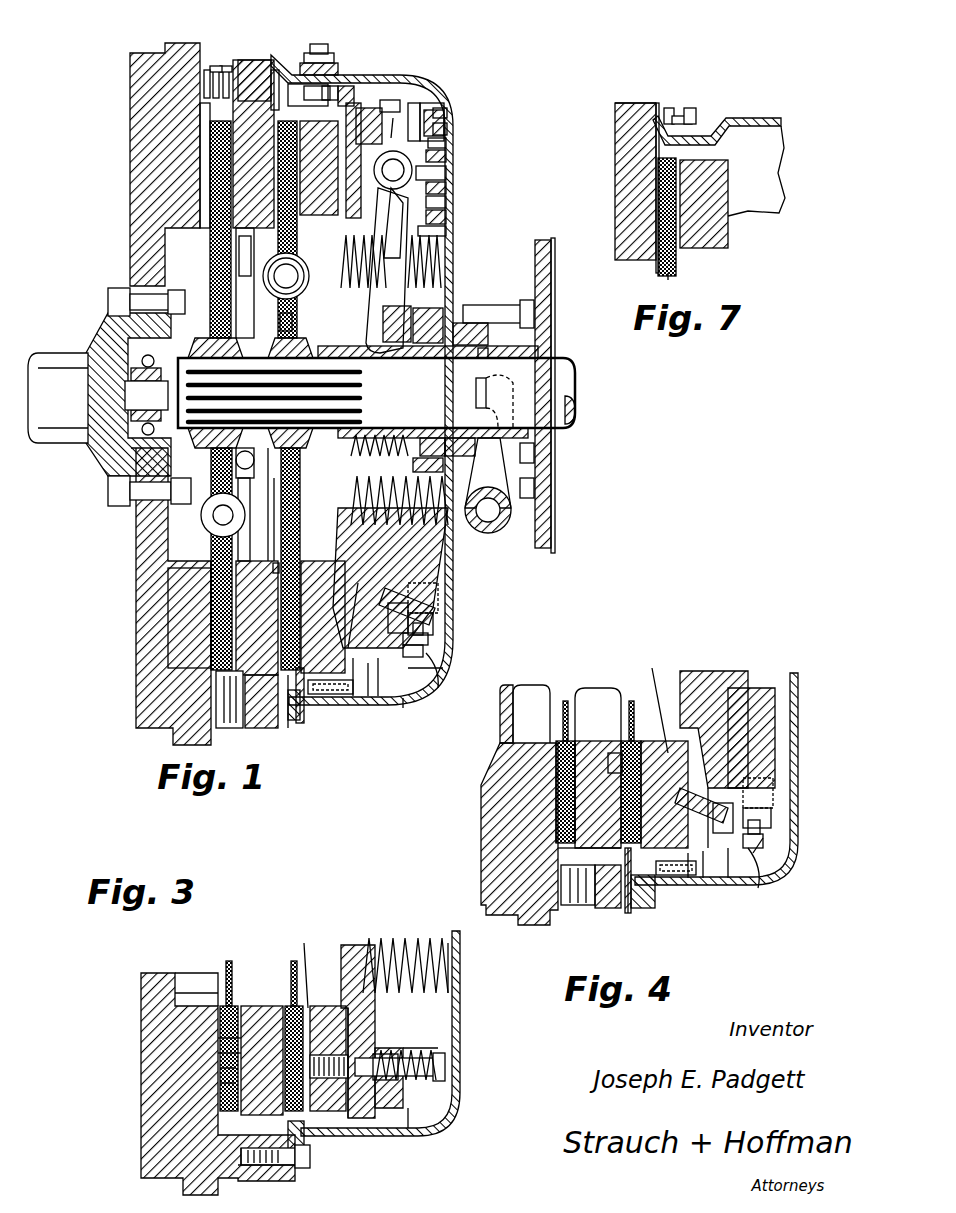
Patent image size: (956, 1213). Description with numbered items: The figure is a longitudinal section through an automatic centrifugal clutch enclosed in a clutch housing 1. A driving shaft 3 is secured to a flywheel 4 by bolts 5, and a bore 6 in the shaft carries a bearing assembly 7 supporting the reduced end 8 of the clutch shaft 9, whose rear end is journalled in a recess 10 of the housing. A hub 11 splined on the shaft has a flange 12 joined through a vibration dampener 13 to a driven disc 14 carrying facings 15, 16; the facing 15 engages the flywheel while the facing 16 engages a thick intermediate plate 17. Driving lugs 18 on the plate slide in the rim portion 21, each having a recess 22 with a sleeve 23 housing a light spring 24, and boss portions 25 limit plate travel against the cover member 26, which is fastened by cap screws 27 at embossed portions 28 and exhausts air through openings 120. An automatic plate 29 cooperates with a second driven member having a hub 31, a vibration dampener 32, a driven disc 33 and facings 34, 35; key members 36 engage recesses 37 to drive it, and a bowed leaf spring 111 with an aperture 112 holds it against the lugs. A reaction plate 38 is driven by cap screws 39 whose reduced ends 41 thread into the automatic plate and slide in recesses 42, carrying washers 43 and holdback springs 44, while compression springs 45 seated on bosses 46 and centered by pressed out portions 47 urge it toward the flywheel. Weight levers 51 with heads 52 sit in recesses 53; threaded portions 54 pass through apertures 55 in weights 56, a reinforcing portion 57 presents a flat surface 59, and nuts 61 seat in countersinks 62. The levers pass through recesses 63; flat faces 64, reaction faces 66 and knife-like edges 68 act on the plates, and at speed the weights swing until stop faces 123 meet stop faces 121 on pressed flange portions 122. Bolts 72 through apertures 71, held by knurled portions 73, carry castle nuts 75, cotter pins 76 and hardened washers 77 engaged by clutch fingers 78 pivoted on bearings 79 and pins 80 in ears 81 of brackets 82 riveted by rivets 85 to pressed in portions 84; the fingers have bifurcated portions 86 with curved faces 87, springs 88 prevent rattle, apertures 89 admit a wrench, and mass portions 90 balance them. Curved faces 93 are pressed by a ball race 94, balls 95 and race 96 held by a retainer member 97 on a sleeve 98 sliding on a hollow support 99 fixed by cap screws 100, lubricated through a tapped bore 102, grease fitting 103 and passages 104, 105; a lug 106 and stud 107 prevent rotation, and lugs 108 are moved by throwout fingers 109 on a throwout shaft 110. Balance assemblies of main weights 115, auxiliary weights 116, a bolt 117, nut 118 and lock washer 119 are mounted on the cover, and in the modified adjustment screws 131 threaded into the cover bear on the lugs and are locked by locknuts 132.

In FIG. 1, the clutch housing 1 is at (547, 528).
In FIG. 1, the driving shaft 3 is at (50, 350).
In FIG. 1, the flywheel 4 is at (150, 163).
In FIG. 4, the flywheel 4 is at (500, 812).
In FIG. 3, the flywheel 4 is at (160, 1097).
In FIG. 1, the bolts 5 is at (102, 483).
In FIG. 1, the bore 6 is at (100, 425).
In FIG. 1, the bearing assembly 7 is at (105, 345).
In FIG. 1, the reduced end 8 is at (122, 396).
In FIG. 1, the clutch shaft 9 is at (560, 373).
In FIG. 1, the recess 10 is at (547, 445).
In FIG. 1, the hub 11 is at (192, 430).
In FIG. 1, the flange 12 is at (230, 322).
In FIG. 1, the vibration dampener 13 is at (205, 512).
In FIG. 1, the driven disc 14 is at (205, 200).
In FIG. 4, the driven disc 14 is at (556, 697).
In FIG. 3, the driven disc 14 is at (215, 988).
In FIG. 1, the facing 15 is at (207, 648).
In FIG. 4, the facing 15 is at (560, 780).
In FIG. 3, the facing 15 is at (215, 1030).
In FIG. 1, the facing 16 is at (210, 632).
In FIG. 4, the facing 16 is at (590, 800).
In FIG. 3, the facing 16 is at (228, 1045).
In FIG. 1, the intermediate plate 17 is at (236, 143).
In FIG. 7, the intermediate plate 17 is at (620, 185).
In FIG. 4, the intermediate plate 17 is at (560, 828).
In FIG. 3, the intermediate plate 17 is at (250, 1005).
In FIG. 1, the driving lugs 18 is at (252, 52).
In FIG. 7, the driving lugs 18 is at (620, 107).
In FIG. 1, the rim portion 21 is at (255, 715).
In FIG. 4, the rim portion 21 is at (600, 895).
In FIG. 3, the rim portion 21 is at (252, 1160).
In FIG. 1, the recess 22 is at (225, 60).
In FIG. 1, the sleeve 23 is at (212, 60).
In FIG. 1, the compression springs 24 is at (201, 62).
In FIG. 1, the boss portions 25 is at (268, 62).
In FIG. 1, the cover member 26 is at (405, 692).
In FIG. 7, the cover member 26 is at (654, 108).
In FIG. 4, the cover member 26 is at (714, 790).
In FIG. 3, the cover member 26 is at (450, 1112).
In FIG. 3, the cap screws 27 is at (302, 1152).
In FIG. 3, the embossed portions 28 is at (285, 1160).
In FIG. 1, the automatic plate 29 is at (300, 180).
In FIG. 7, the automatic plate 29 is at (700, 187).
In FIG. 4, the automatic plate 29 is at (640, 735).
In FIG. 3, the automatic plate 29 is at (320, 1107).
In FIG. 1, the hub 31 is at (244, 452).
In FIG. 1, the vibration dampener 32 is at (266, 268).
In FIG. 1, the driven disc 33 is at (262, 283).
In FIG. 7, the driven disc 33 is at (665, 268).
In FIG. 4, the driven disc 33 is at (620, 700).
In FIG. 3, the driven disc 33 is at (284, 955).
In FIG. 1, the facing 34 is at (220, 585).
In FIG. 7, the facing 34 is at (655, 212).
In FIG. 4, the facing 34 is at (562, 760).
In FIG. 3, the facing 34 is at (222, 1060).
In FIG. 1, the facing 35 is at (200, 600).
In FIG. 7, the facing 35 is at (652, 230).
In FIG. 4, the facing 35 is at (556, 745).
In FIG. 3, the facing 35 is at (218, 1075).
In FIG. 1, the key members 36 is at (318, 688).
In FIG. 4, the key members 36 is at (655, 868).
In FIG. 1, the recesses 37 is at (290, 705).
In FIG. 4, the recesses 37 is at (624, 880).
In FIG. 1, the reaction plate 38 is at (285, 495).
In FIG. 4, the reaction plate 38 is at (700, 665).
In FIG. 3, the reaction plate 38 is at (300, 990).
In FIG. 3, the cap screws 39 is at (437, 1058).
In FIG. 3, the reduced end 41 is at (345, 1110).
In FIG. 3, the recesses 42 is at (375, 1100).
In FIG. 3, the washers 43 is at (380, 1045).
In FIG. 3, the holdback springs 44 is at (410, 1040).
In FIG. 1, the compression springs 45 is at (425, 255).
In FIG. 3, the compression springs 45 is at (430, 935).
In FIG. 3, the bosses 46 is at (345, 960).
In FIG. 3, the pressed out portions 47 is at (445, 965).
In FIG. 1, the weight levers 51 is at (412, 615).
In FIG. 4, the weight levers 51 is at (750, 805).
In FIG. 1, the heads 52 is at (400, 596).
In FIG. 4, the heads 52 is at (690, 790).
In FIG. 1, the recesses 53 is at (282, 565).
In FIG. 4, the recesses 53 is at (660, 745).
In FIG. 1, the threaded portions 54 is at (407, 640).
In FIG. 4, the threaded portions 54 is at (745, 840).
In FIG. 1, the apertures 55 is at (405, 605).
In FIG. 4, the apertures 55 is at (745, 780).
In FIG. 1, the weight element 56 is at (360, 560).
In FIG. 4, the weight element 56 is at (767, 700).
In FIG. 1, the reinforcing portion 57 is at (425, 680).
In FIG. 4, the reinforcing portion 57 is at (720, 870).
In FIG. 1, the flat surface 59 is at (385, 590).
In FIG. 4, the flat surface 59 is at (730, 760).
In FIG. 1, the nuts 61 is at (414, 625).
In FIG. 4, the nuts 61 is at (755, 815).
In FIG. 1, the countersinks 62 is at (416, 633).
In FIG. 4, the countersinks 62 is at (760, 830).
In FIG. 1, the recesses 63 is at (360, 690).
In FIG. 4, the recesses 63 is at (695, 870).
In FIG. 4, the flat faces 64 is at (612, 750).
In FIG. 1, the reaction faces 66 is at (350, 575).
In FIG. 4, the reaction faces 66 is at (705, 790).
In FIG. 1, the knife-like edges 68 is at (323, 700).
In FIG. 4, the knife-like edges 68 is at (662, 867).
In FIG. 1, the apertures 71 is at (348, 72).
In FIG. 1, the bolts 72 is at (440, 110).
In FIG. 1, the knurled portions 73 is at (369, 126).
In FIG. 1, the castle nuts 75 is at (438, 98).
In FIG. 1, the cotter pins 76 is at (437, 121).
In FIG. 1, the hardened washers 77 is at (425, 95).
In FIG. 1, the clutch fingers 78 is at (438, 228).
In FIG. 1, the roller or needle bearings 79 is at (377, 183).
In FIG. 1, the pins 80 is at (404, 165).
In FIG. 1, the ears 81 is at (438, 180).
In FIG. 1, the bracket members 82 is at (438, 210).
In FIG. 1, the pressed in portions 84 is at (438, 150).
In FIG. 1, the rivets 85 is at (438, 194).
In FIG. 1, the bifurcated portions 86 is at (385, 110).
In FIG. 1, the curved faces 87 is at (410, 110).
In FIG. 1, the compression springs 88 is at (362, 75).
In FIG. 1, the apertures 89 is at (372, 90).
In FIG. 1, the mass portions 90 is at (390, 200).
In FIG. 1, the curved faces 93 is at (398, 330).
In FIG. 1, the ball race 94 is at (420, 462).
In FIG. 1, the anti-friction balls 95 is at (470, 465).
In FIG. 1, the ball race 96 is at (444, 430).
In FIG. 1, the retainer and reservoir member 97 is at (430, 300).
In FIG. 1, the sleeve 98 is at (422, 430).
In FIG. 1, the hollow supporting member 99 is at (543, 270).
In FIG. 1, the cap screws 100 is at (547, 478).
In FIG. 1, the tapped bore 102 is at (472, 350).
In FIG. 1, the grease fitting 103 is at (470, 297).
In FIG. 1, the passage 104 is at (468, 366).
In FIG. 1, the passage 105 is at (440, 348).
In FIG. 1, the apertured lug 106 is at (490, 314).
In FIG. 1, the stud 107 is at (527, 300).
In FIG. 1, the lugs 108 is at (492, 392).
In FIG. 1, the throwout fingers 109 is at (505, 370).
In FIG. 1, the throwout shaft 110 is at (492, 515).
In FIG. 1, the bowed leaf spring 111 is at (279, 720).
In FIG. 4, the bowed leaf spring 111 is at (621, 900).
In FIG. 1, the aperture 112 is at (345, 695).
In FIG. 4, the aperture 112 is at (680, 870).
In FIG. 1, the main weight members 115 is at (284, 78).
In FIG. 1, the auxiliary weight members 116 is at (300, 80).
In FIG. 1, the bolt 117 is at (320, 80).
In FIG. 1, the nut 118 is at (325, 55).
In FIG. 1, the lock washer 119 is at (310, 45).
In FIG. 1, the openings 120 is at (222, 718).
In FIG. 4, the openings 120 is at (570, 900).
In FIG. 1, the stop faces 121 is at (395, 700).
In FIG. 4, the stop faces 121 is at (748, 880).
In FIG. 1, the pressed flange portions 122 is at (370, 680).
In FIG. 3, the pressed flange portions 122 is at (400, 1115).
In FIG. 1, the stop faces 123 is at (430, 660).
In FIG. 7, the screws 131 is at (690, 108).
In FIG. 7, the locknuts 132 is at (668, 106).